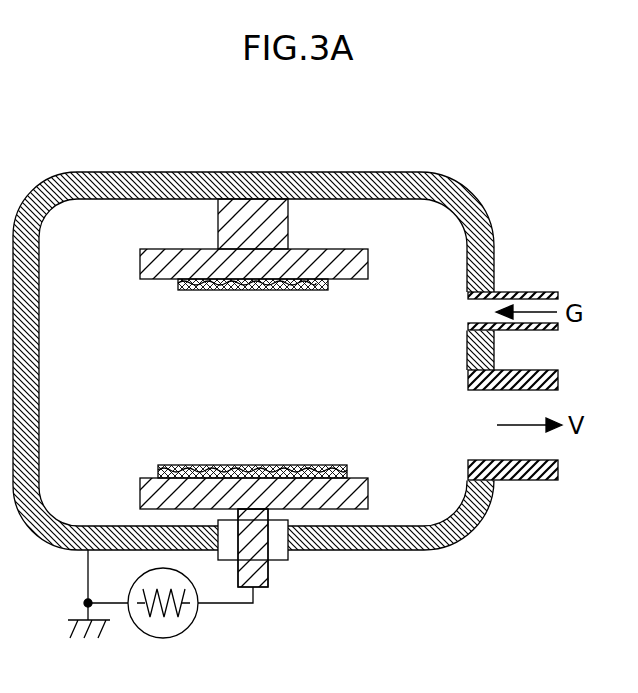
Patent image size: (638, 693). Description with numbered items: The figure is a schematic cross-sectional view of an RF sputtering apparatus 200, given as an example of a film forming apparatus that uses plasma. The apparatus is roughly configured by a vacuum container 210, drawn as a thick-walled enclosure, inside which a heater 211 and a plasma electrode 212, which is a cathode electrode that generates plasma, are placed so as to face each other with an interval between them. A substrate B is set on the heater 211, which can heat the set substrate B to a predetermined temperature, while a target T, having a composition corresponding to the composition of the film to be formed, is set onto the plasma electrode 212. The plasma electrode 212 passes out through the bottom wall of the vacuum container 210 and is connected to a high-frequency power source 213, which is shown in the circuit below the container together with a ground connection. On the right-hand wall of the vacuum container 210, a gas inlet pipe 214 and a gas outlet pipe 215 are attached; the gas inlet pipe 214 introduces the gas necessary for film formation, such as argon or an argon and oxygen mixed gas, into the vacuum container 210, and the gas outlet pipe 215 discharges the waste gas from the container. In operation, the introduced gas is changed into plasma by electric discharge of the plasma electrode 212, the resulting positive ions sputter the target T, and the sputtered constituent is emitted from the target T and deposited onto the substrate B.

The RF sputtering apparatus 200 is at (504, 119).
The vacuum container 210 is at (310, 173).
The heater 211 is at (140, 261).
The plasma electrode 212 is at (140, 491).
The high-frequency power source 213 is at (190, 622).
The gas inlet pipe 214 is at (529, 291).
The gas outlet pipe 215 is at (532, 481).
The substrate B is at (283, 291).
The target T is at (286, 463).